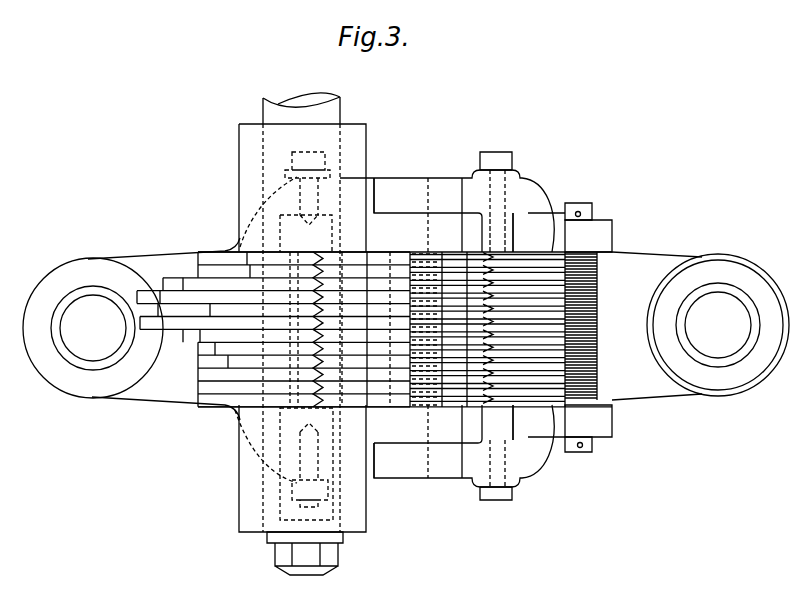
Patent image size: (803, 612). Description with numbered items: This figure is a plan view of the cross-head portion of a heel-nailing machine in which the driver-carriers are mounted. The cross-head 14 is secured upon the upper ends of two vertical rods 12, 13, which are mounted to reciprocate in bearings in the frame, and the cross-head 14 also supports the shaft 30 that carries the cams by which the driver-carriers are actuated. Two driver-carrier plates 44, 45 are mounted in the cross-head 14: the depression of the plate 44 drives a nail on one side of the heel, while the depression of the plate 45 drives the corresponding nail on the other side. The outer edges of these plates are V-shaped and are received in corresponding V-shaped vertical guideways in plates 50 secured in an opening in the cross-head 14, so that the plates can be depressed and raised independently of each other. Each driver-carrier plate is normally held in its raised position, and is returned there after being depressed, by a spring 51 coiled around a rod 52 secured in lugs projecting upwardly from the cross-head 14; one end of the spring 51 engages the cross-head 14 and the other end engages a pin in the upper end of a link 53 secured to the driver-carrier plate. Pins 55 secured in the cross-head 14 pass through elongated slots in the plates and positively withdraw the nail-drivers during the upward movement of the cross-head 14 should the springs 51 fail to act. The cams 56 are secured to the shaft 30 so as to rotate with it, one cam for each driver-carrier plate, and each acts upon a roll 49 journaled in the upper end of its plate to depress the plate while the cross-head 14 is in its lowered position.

The vertical rod 12 is at (718, 325).
The vertical rod 13 is at (93, 328).
The cross-head 14 is at (533, 185).
The shaft 30 is at (312, 101).
The driver-carrier plate 44 is at (450, 252).
The driver-carrier plate 45 is at (499, 326).
The roll 49 is at (412, 252).
The plate 50 is at (270, 222).
The spring 51 is at (540, 253).
The rod 52 is at (594, 210).
The link 53 is at (460, 250).
The pin 55 is at (372, 222).
The cam 56 is at (207, 398).